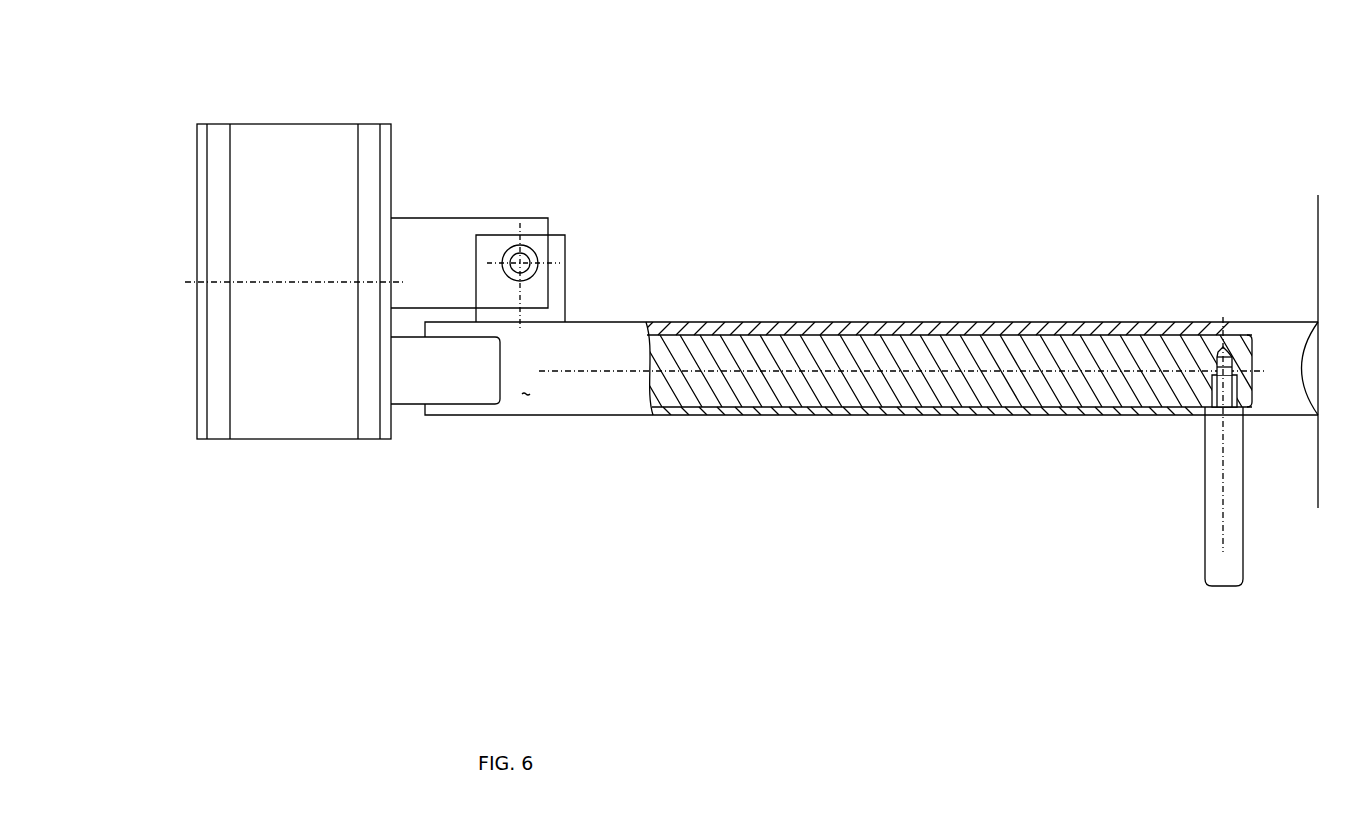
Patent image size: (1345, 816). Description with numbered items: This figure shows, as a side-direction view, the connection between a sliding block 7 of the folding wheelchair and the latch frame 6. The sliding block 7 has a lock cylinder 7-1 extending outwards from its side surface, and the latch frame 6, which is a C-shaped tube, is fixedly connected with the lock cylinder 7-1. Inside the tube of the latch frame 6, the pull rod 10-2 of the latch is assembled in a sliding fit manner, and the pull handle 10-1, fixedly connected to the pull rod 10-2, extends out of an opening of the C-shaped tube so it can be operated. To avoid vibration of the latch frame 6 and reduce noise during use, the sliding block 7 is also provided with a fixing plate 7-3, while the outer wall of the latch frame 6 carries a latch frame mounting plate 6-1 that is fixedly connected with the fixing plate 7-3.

The sliding block 7 is at (257, 147).
The fixing plate 7-3 is at (457, 245).
The latch frame mounting plate 6-1 is at (555, 242).
The latch frame 6 is at (880, 325).
The pull rod 10-2 is at (762, 345).
The lock cylinder 7-1 is at (453, 382).
The pull handle 10-1 is at (1218, 482).